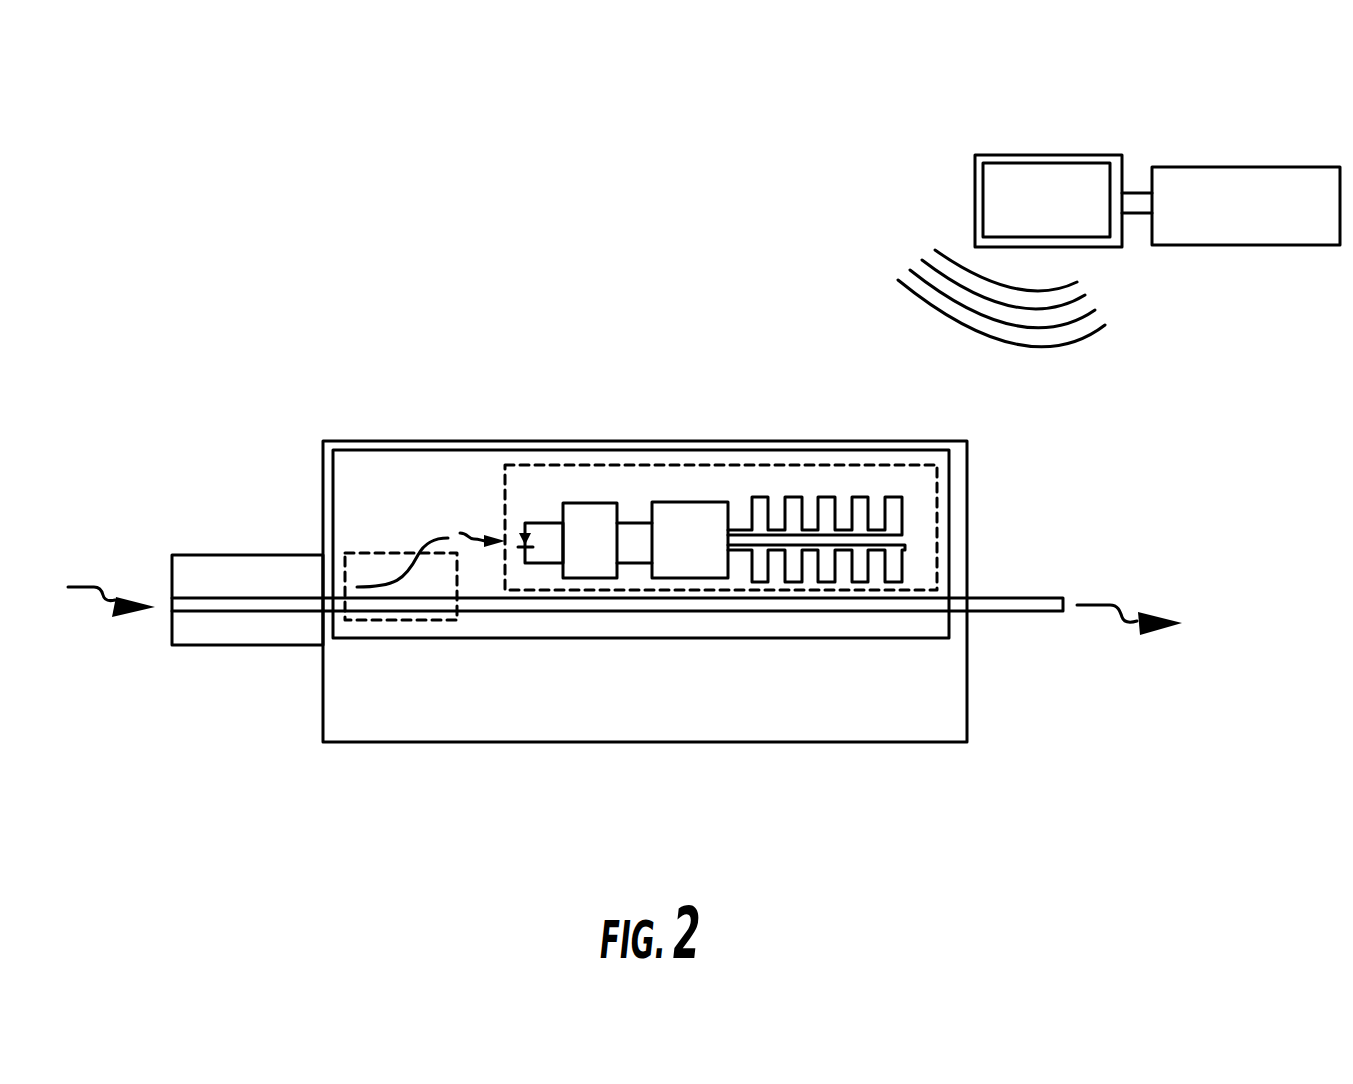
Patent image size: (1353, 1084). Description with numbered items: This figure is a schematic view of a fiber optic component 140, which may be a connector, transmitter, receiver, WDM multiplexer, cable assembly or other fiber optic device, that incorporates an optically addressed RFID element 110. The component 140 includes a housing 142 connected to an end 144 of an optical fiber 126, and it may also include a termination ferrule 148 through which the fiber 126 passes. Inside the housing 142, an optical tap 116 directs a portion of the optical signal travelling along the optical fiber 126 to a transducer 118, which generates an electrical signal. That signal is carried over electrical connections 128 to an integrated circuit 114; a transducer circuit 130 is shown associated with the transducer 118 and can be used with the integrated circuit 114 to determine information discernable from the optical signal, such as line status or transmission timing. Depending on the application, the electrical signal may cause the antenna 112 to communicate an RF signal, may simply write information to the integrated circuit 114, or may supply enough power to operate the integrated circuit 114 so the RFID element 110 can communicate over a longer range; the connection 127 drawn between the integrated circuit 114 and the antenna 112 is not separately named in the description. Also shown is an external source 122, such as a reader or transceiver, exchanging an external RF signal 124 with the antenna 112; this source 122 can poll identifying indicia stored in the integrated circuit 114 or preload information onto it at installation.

The optically addressed RFID element 110 is at (672, 640).
The antenna 112 is at (905, 563).
The integrated circuit 114 is at (700, 502).
The optical tap 116 is at (397, 632).
The transducer 118 is at (540, 547).
The source 122 is at (1082, 115).
The RF signal 124 is at (1032, 340).
The optical fiber 126 is at (995, 613).
The antenna leads 127 is at (750, 578).
The electrical connections 128 is at (635, 557).
The transducer circuit 130 is at (587, 502).
The fiber optic component 140 is at (550, 830).
The housing 142 is at (822, 743).
The end of optical fiber 144 is at (167, 598).
The termination ferrule 148 is at (243, 555).